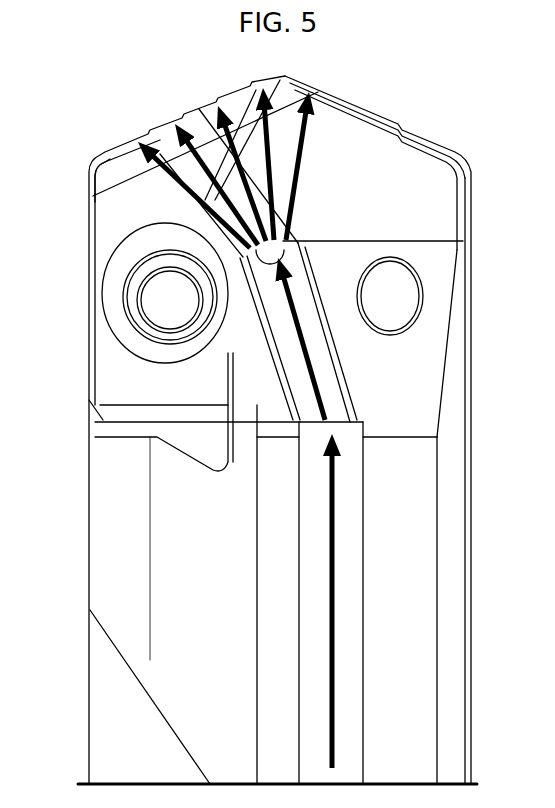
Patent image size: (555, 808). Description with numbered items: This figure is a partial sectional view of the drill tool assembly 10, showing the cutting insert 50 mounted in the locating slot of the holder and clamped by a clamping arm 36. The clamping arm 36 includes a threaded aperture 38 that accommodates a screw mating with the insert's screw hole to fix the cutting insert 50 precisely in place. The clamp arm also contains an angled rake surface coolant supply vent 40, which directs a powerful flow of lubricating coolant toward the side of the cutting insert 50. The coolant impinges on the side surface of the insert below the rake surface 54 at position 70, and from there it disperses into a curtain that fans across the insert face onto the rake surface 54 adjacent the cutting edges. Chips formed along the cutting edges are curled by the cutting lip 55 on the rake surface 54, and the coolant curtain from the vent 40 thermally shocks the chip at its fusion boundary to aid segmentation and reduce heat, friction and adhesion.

The drill tool assembly 10 is at (140, 72).
The clamping arm 36 is at (440, 269).
The aperture 38 is at (424, 300).
The rake surface coolant supply vent 40 is at (275, 351).
The cutting insert 50 is at (364, 106).
The rake surface 54 is at (124, 174).
The cutting lip 55 is at (128, 162).
The impingement position on insert side surface 70 is at (277, 253).